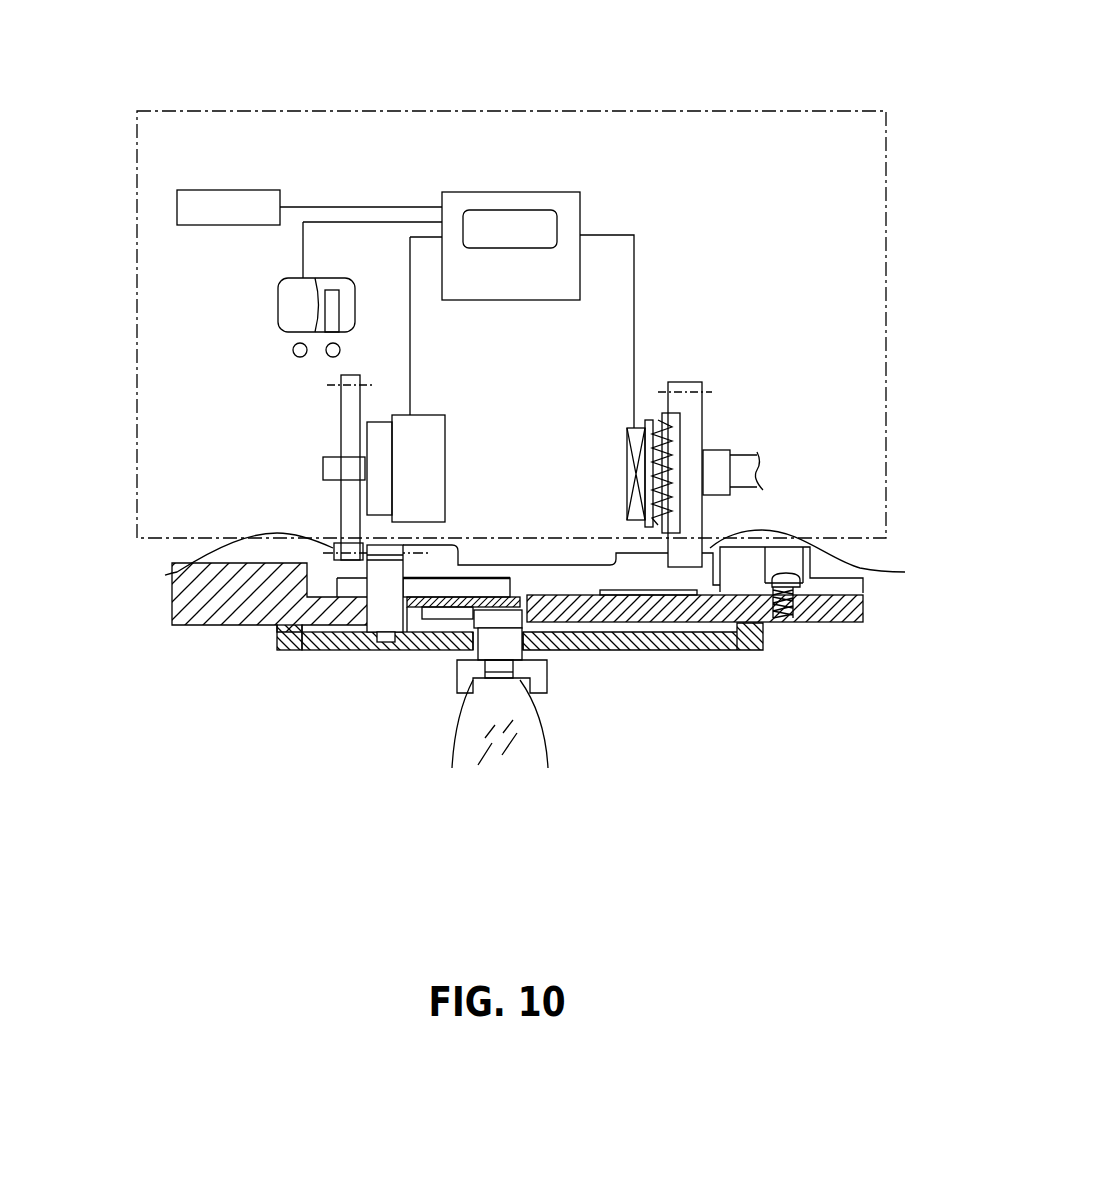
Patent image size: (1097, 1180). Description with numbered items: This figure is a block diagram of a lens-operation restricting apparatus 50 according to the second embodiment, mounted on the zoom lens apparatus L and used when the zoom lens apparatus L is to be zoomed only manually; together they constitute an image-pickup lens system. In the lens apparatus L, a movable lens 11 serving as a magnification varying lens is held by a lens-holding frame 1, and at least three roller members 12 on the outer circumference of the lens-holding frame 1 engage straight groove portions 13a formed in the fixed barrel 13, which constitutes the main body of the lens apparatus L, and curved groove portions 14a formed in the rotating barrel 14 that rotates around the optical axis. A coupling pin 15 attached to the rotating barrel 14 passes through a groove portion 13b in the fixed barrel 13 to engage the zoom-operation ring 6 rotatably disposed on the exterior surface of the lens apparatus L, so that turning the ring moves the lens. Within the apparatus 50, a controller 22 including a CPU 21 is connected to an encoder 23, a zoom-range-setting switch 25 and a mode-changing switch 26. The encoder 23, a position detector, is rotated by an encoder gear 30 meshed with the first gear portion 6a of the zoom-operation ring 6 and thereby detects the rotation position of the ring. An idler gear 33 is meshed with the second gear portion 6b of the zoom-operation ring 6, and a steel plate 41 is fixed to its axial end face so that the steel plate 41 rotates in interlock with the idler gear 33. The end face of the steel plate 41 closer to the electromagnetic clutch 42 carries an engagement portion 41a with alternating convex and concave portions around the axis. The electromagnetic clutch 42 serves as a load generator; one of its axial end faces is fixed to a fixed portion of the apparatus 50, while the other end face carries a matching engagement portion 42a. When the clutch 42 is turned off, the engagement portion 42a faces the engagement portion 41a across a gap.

The lens-operation restricting apparatus 50 is at (735, 106).
The zoom-range-setting switch 25 is at (226, 196).
The CPU 21 is at (500, 210).
The controller 22 is at (567, 208).
The mode-changing switch 26 is at (278, 304).
The encoder 23 is at (438, 487).
The encoder gear 30 is at (341, 507).
The electromagnetic clutch 42 is at (627, 440).
The engagement portion 42a is at (650, 420).
The steel plate 41 is at (661, 413).
The idler gear 33 is at (692, 403).
The engagement portion 41a is at (668, 453).
The first gear portion 6a is at (165, 572).
The second gear portion 6b is at (905, 572).
The zoom-operation ring 6 is at (664, 580).
The fixed barrel 13 is at (197, 628).
The straight groove portions 13a is at (433, 618).
The groove portion 13b is at (296, 652).
The rotating barrel 14 is at (735, 652).
The curved groove portions 14a is at (567, 650).
The coupling pin 15 is at (352, 652).
The roller members 12 is at (467, 653).
The lens-holding frame 1 is at (547, 678).
The movable lens 11 is at (508, 756).
The lens apparatus L is at (138, 632).